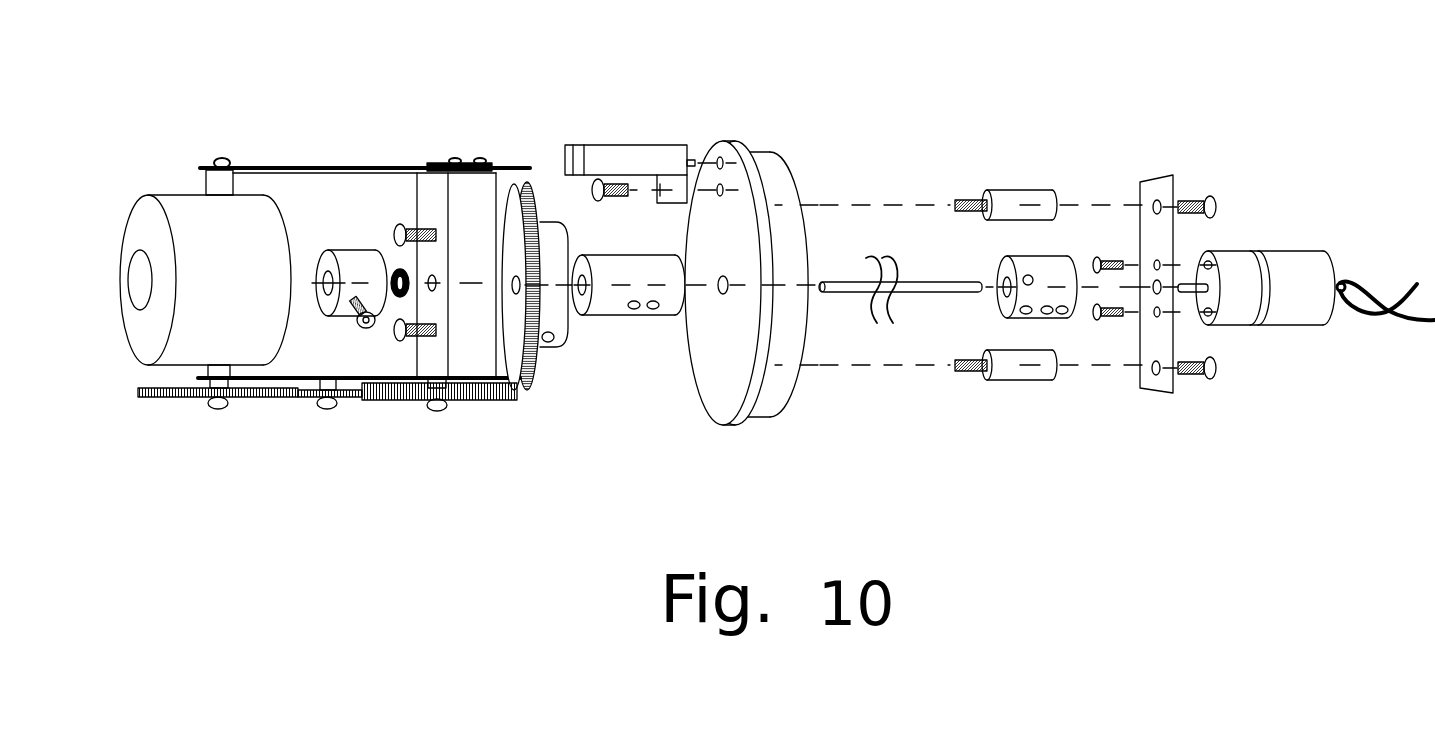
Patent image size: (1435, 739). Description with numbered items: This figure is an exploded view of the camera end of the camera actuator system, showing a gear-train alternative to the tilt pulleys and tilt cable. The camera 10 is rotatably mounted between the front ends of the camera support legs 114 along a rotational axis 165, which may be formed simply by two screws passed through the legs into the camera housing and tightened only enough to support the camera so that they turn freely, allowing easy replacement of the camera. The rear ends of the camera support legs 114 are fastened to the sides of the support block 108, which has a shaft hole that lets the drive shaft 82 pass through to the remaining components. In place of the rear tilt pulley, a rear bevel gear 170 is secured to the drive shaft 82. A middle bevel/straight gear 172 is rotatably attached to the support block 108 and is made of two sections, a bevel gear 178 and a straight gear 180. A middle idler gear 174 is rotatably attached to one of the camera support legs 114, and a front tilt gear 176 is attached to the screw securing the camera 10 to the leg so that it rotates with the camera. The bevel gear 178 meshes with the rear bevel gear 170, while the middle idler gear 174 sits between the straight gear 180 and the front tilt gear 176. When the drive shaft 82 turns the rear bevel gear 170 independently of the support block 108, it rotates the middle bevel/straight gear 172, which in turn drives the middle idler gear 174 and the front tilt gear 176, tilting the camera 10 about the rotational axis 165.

The rotational axis 165 is at (354, 201).
The camera 10 is at (185, 210).
The camera support legs 114 is at (325, 165).
The support block 108 is at (463, 187).
The rear bevel gear 170 is at (530, 186).
The bevel gear 178 is at (523, 380).
The middle bevel/straight gear 172 is at (458, 400).
The straight gear 180 is at (493, 400).
The front tilt gear 176 is at (250, 397).
The middle idler gear 174 is at (350, 400).
The drive shaft 82 is at (838, 278).